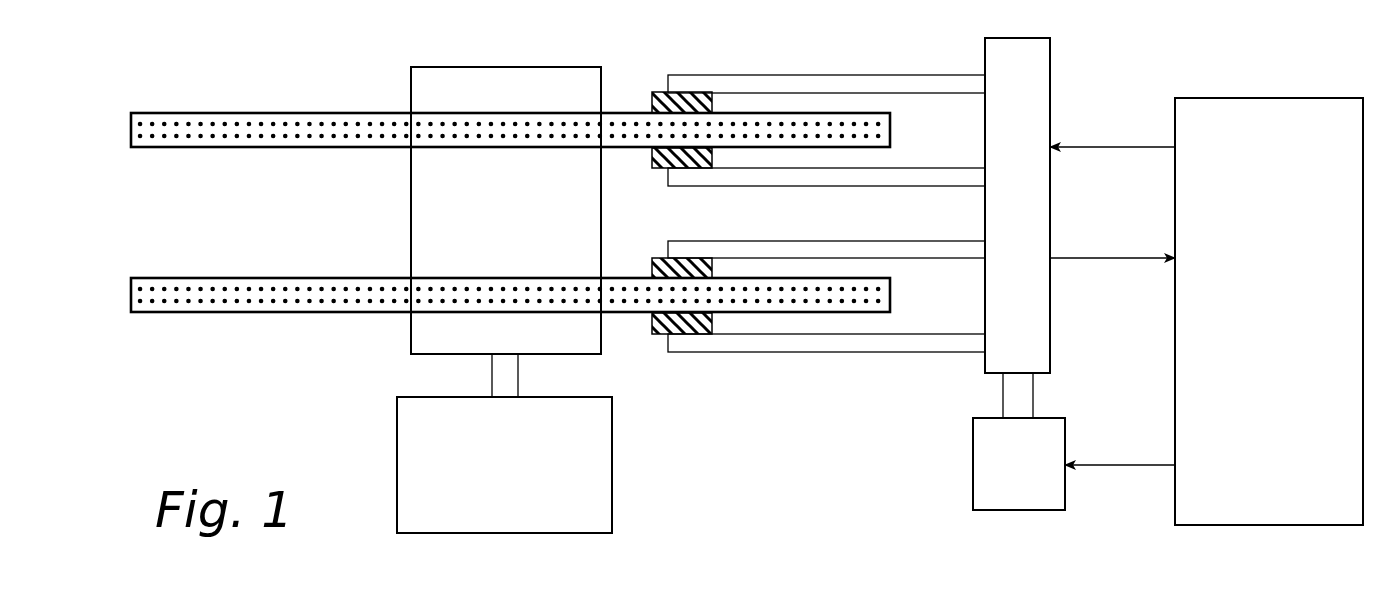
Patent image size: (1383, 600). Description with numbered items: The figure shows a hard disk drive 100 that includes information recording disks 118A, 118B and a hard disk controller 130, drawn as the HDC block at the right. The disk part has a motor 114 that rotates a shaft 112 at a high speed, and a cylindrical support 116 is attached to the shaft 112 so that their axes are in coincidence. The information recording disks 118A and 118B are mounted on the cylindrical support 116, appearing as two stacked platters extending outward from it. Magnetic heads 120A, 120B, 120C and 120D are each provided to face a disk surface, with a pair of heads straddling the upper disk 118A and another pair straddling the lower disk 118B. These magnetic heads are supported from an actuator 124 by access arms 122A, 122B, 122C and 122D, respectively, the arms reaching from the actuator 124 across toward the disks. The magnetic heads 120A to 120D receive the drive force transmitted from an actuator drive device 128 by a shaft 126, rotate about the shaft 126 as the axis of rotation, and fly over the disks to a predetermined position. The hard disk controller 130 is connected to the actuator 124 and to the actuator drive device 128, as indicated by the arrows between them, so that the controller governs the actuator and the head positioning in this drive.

The hard disk drive 100 is at (293, 75).
The shaft 112 is at (490, 368).
The motor 114 is at (527, 495).
The cylindrical support 116 is at (457, 67).
The information recording disk 118A is at (163, 113).
The information recording disk 118B is at (163, 313).
The magnetic head 120A is at (656, 93).
The magnetic head 120B is at (657, 168).
The magnetic head 120C is at (659, 259).
The magnetic head 120D is at (656, 334).
The access arm 122A is at (785, 75).
The access arm 122B is at (835, 188).
The access arm 122C is at (808, 241).
The access arm 122D is at (803, 352).
The actuator 124 is at (1052, 52).
The shaft 126 is at (1003, 407).
The actuator drive device 128 is at (973, 473).
The hard disk controller 130 is at (1293, 400).